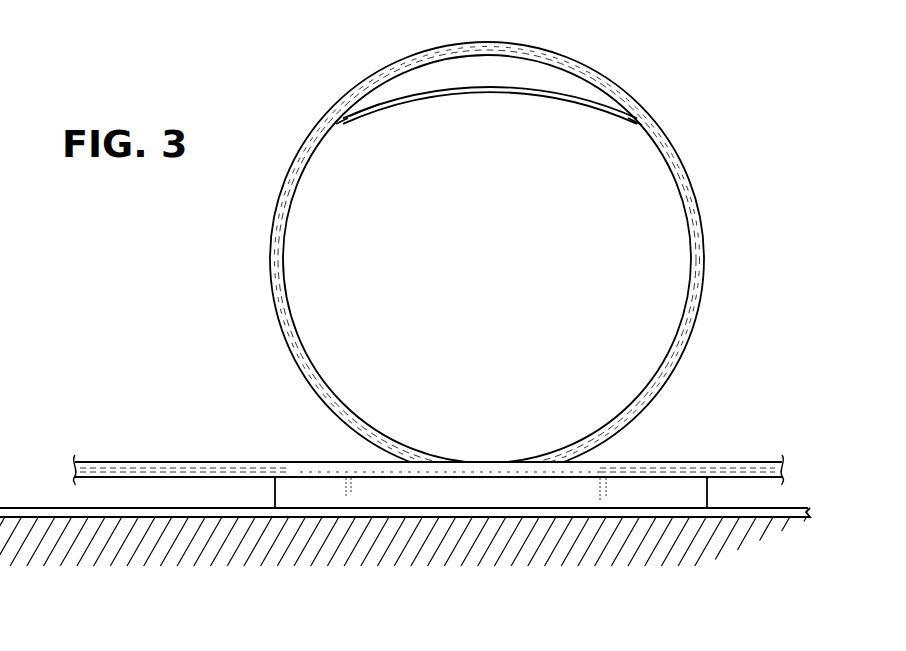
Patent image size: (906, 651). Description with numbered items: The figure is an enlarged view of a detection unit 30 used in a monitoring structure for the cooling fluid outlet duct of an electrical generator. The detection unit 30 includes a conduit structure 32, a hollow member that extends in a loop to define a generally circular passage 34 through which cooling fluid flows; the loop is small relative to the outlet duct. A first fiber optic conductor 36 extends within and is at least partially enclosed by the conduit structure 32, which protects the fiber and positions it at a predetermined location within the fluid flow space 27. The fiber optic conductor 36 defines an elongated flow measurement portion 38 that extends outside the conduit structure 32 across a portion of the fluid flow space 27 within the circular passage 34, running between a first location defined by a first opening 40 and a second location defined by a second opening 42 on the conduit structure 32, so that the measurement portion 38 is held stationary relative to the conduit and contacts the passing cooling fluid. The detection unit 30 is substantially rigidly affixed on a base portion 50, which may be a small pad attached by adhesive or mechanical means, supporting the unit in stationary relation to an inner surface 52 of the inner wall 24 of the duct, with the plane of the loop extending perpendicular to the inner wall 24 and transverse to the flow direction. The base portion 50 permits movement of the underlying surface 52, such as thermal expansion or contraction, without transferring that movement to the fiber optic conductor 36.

The detection unit 30 is at (277, 104).
The conduit structure 32 is at (397, 61).
The circular passage 34 is at (323, 226).
The first fiber optic conductor 36 is at (368, 109).
The flow measurement portion 38 is at (418, 96).
The first opening 40 is at (347, 121).
The second opening 42 is at (618, 113).
The fluid flow space 27 is at (752, 245).
The base portion 50 is at (708, 490).
The inner surface 52 is at (248, 507).
The inner wall 24 is at (193, 540).